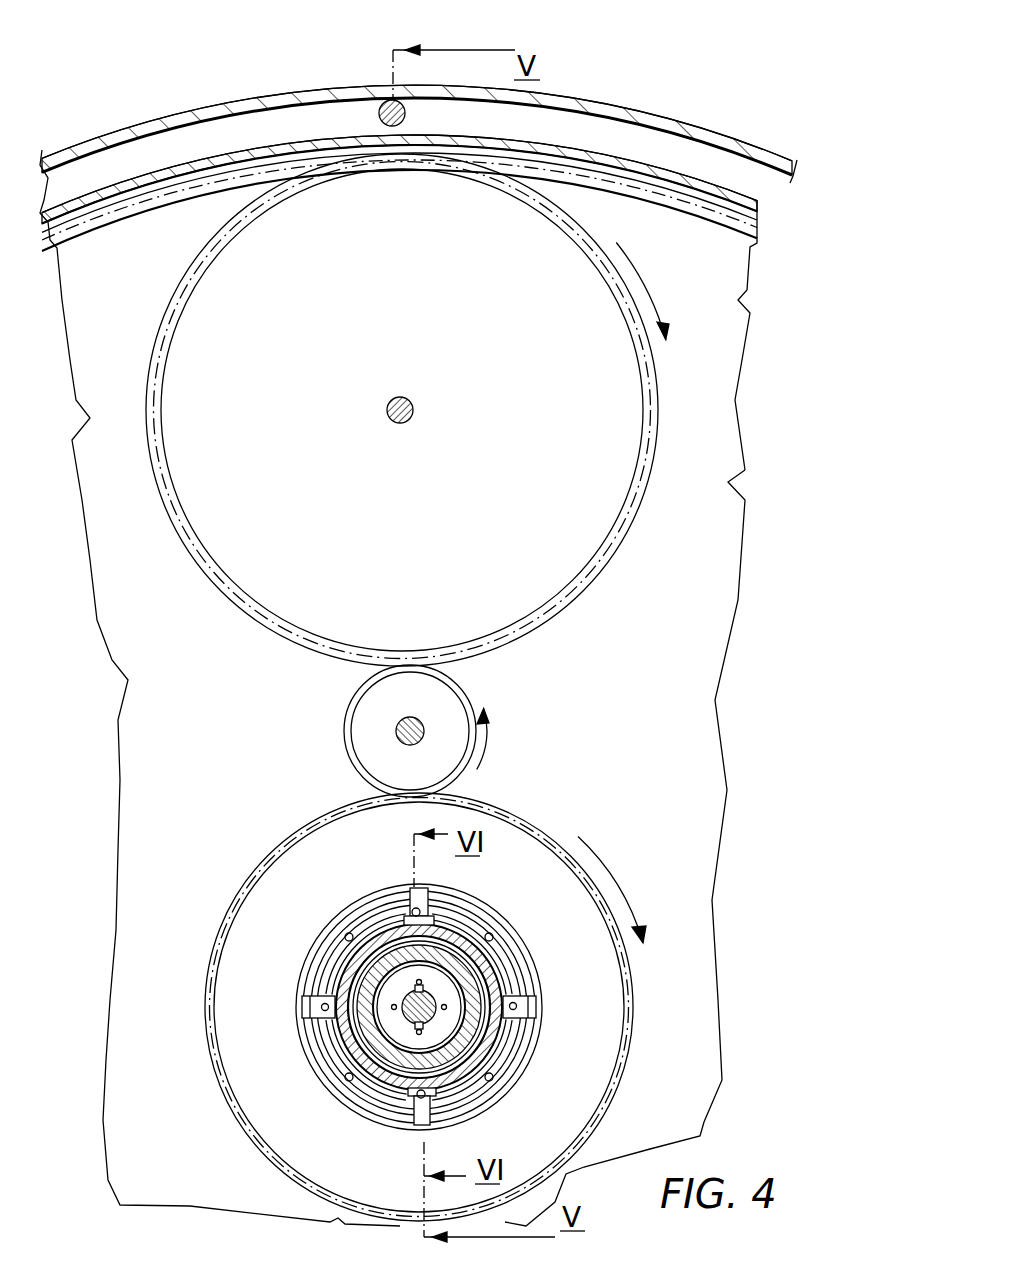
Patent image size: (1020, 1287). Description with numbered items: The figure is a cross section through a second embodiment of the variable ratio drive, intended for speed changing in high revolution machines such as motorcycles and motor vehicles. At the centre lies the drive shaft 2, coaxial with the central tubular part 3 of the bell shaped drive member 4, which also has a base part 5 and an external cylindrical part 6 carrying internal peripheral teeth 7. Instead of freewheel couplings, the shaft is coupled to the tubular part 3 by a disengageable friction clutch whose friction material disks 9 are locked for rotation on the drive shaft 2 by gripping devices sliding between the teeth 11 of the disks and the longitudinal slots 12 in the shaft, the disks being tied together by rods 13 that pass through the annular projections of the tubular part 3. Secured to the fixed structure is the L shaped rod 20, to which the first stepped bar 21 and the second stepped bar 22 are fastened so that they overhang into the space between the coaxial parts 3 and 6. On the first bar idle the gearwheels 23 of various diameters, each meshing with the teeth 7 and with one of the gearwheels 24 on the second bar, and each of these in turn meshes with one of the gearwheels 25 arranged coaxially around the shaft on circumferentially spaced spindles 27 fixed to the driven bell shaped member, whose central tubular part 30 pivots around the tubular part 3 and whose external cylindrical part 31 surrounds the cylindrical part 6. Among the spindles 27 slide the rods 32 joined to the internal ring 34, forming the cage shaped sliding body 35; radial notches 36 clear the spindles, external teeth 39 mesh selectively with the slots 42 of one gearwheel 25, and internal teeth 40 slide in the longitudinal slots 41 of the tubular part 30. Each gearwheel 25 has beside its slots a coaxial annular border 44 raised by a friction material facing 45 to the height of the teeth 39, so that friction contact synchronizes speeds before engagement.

The drive shaft 2 is at (437, 1002).
The central tubular part 3 is at (441, 948).
The bell shaped member 4 is at (730, 773).
The base part 5 is at (720, 260).
The external cylindrical part 6 is at (630, 162).
The internal peripheral teeth 7 is at (700, 210).
The friction material disks 9 is at (484, 962).
The teeth of the disks 11 is at (426, 1031).
The longitudinal slots 12 is at (397, 1053).
The rods 13 is at (392, 1004).
The L shaped rod 20 is at (384, 104).
The first stepped bar 21 is at (412, 404).
The second stepped bar 22 is at (397, 734).
The gearwheels 23 is at (656, 468).
The gearwheels 24 is at (348, 698).
The gearwheels 25 is at (533, 822).
The spindles 27 is at (344, 930).
The central tubular part 30 is at (347, 1023).
The external cylindrical part 31 is at (565, 104).
The rods 32 is at (300, 1010).
The internal ring 34 is at (337, 1052).
The cage shaped sliding body 35 is at (326, 952).
The radial notches 36 is at (365, 920).
The external teeth 39 is at (408, 903).
The internal teeth 40 is at (420, 1030).
The longitudinal slots 41 is at (424, 1097).
The slots 42 is at (409, 898).
The coaxial annular border 44 is at (534, 1060).
The friction material facing 45 is at (524, 1078).